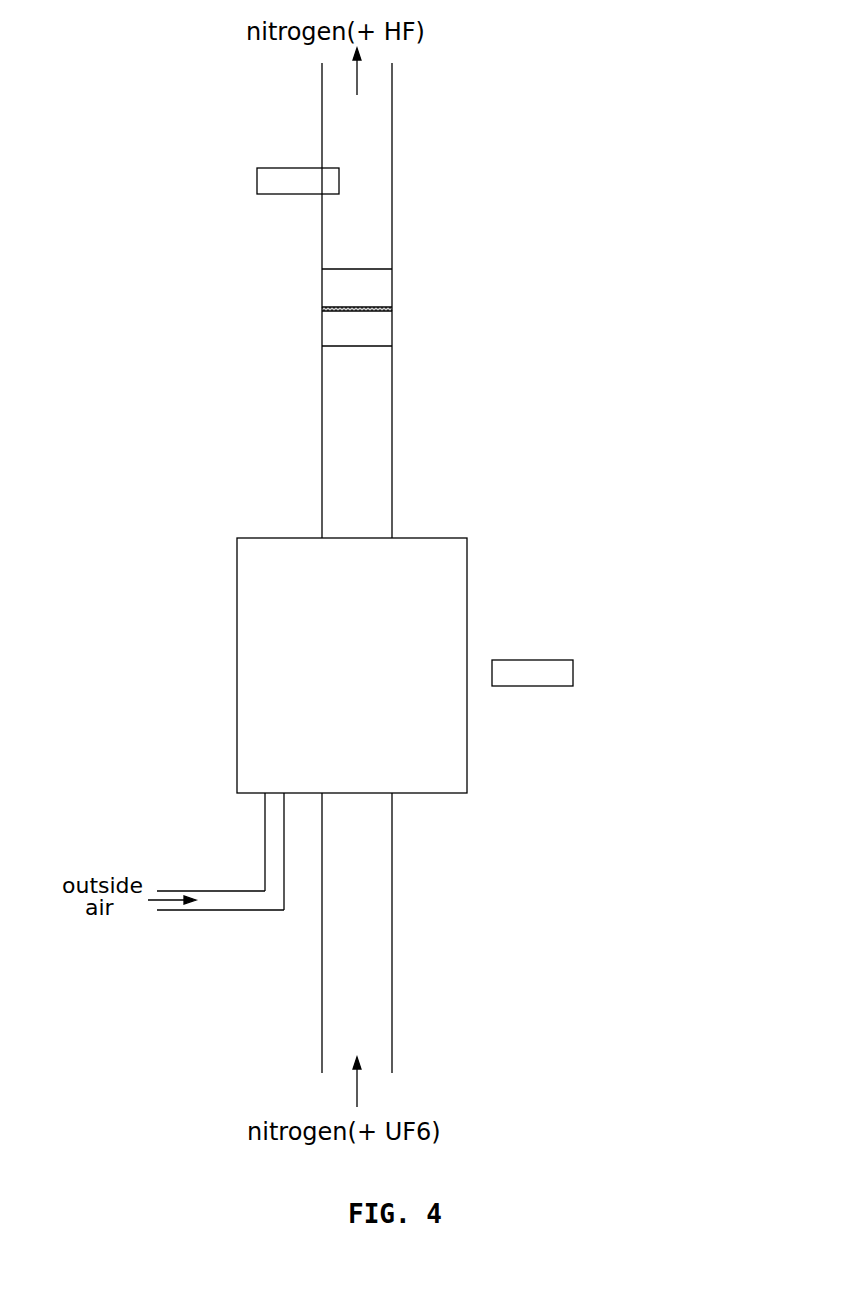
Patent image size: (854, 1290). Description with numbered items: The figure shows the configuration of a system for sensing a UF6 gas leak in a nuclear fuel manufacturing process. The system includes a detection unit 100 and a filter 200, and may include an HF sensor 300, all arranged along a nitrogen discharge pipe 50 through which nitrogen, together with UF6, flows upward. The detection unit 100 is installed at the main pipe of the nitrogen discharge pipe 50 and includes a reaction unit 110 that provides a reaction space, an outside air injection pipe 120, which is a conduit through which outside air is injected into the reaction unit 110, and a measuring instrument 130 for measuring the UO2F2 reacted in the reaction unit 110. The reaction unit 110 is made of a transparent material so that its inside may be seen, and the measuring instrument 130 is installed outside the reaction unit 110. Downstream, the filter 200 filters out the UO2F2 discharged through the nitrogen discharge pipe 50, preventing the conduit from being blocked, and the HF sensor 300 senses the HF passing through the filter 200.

The nitrogen discharge pipe 50 is at (322, 442).
The detection unit 100 is at (449, 724).
The reaction unit 110 is at (467, 567).
The outside air injection pipe 120 is at (285, 852).
The measuring instrument 130 is at (573, 676).
The filter 200 is at (392, 310).
The HF sensor 300 is at (258, 183).